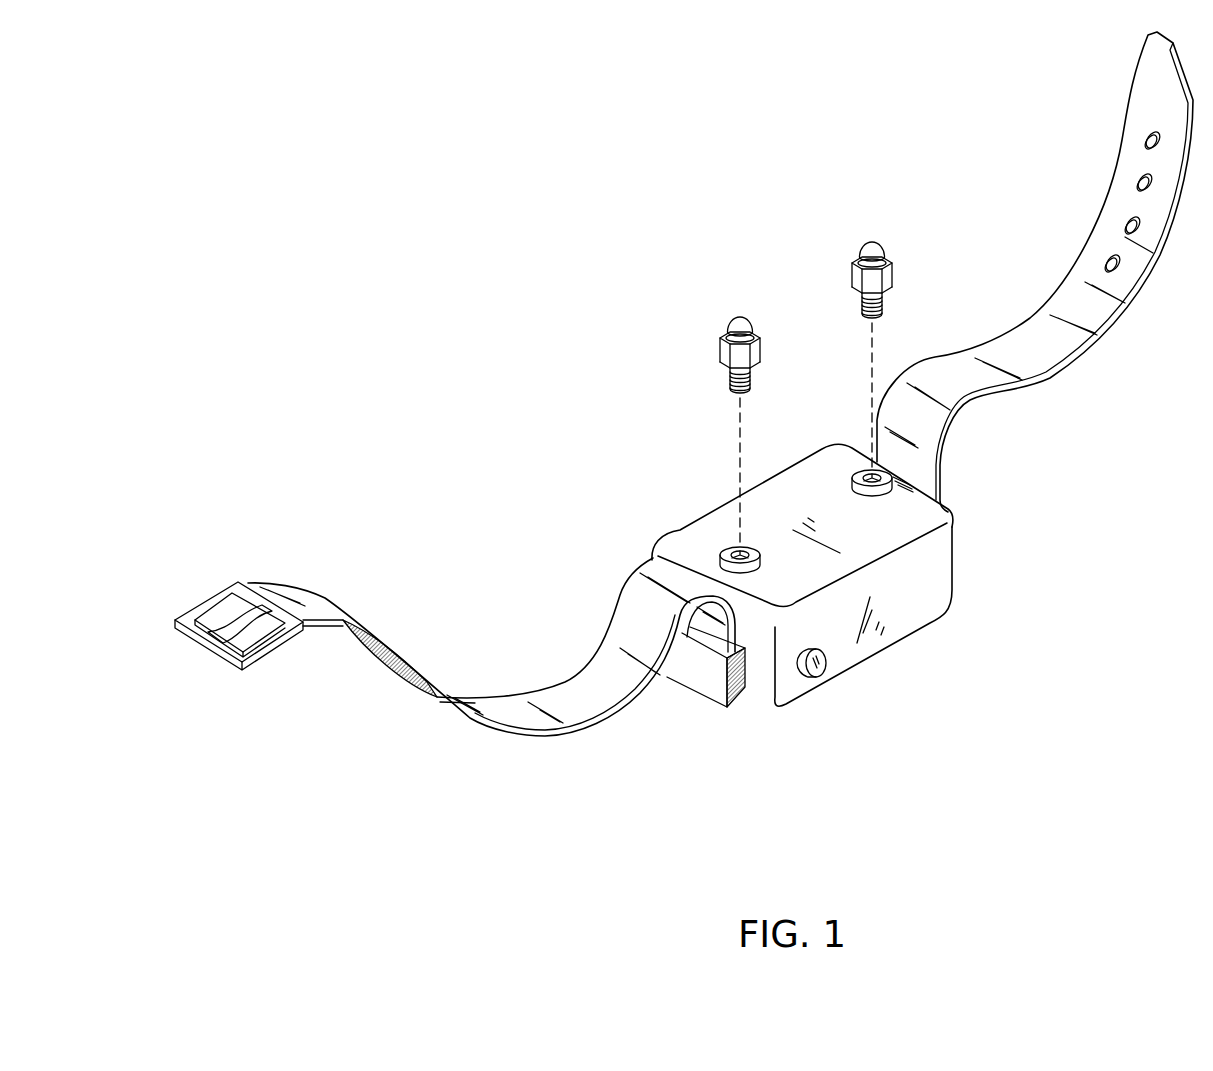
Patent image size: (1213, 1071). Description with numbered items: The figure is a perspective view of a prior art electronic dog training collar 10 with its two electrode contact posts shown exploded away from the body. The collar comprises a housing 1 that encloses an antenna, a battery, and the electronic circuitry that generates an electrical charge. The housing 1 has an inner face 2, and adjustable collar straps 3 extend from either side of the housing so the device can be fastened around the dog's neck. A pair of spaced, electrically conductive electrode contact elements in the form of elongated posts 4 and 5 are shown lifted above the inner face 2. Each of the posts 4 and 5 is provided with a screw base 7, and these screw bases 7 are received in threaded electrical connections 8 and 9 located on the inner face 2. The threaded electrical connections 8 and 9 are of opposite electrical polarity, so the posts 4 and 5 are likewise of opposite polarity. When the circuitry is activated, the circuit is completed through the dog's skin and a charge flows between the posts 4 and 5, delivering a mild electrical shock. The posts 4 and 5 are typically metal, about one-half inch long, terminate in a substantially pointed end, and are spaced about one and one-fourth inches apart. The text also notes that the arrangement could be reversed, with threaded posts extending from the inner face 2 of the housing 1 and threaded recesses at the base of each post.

The wearable device assembly 10 is at (450, 260).
The housing 1 is at (905, 580).
The inner face 2 is at (823, 495).
The adjustable collar straps 3 is at (517, 730).
The elongated post 4 is at (872, 240).
The elongated post 5 is at (720, 346).
The screw bases 7 is at (728, 377).
The threaded electrical connection 8 is at (735, 547).
The threaded electrical connection 9 is at (951, 514).